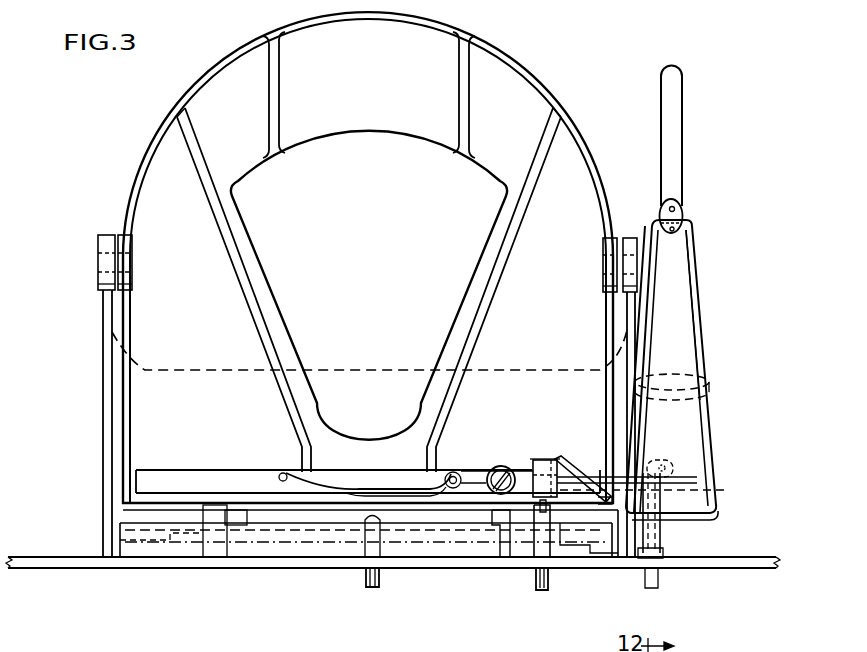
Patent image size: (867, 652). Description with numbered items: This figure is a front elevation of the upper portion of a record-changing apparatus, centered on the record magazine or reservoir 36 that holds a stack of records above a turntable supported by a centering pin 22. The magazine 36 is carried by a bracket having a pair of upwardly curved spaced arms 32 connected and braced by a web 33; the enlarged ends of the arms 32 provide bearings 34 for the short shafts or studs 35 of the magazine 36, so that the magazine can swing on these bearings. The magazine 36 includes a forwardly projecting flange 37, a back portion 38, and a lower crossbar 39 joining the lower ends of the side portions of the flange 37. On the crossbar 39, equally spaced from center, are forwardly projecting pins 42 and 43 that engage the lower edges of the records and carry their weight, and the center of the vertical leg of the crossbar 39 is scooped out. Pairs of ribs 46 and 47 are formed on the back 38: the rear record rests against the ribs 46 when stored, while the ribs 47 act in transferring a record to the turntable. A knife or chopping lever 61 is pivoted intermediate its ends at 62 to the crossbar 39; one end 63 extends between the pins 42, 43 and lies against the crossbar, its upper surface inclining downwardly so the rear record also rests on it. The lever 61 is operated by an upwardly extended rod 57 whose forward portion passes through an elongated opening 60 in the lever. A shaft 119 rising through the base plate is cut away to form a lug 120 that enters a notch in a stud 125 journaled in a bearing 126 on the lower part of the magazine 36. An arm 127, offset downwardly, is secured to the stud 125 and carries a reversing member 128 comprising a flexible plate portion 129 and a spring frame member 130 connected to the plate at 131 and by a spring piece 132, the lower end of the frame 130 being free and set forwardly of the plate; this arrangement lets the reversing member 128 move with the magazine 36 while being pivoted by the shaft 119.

The centering pin 22 is at (364, 578).
The upwardly curved spaced arms 32 is at (108, 387).
The web 33 is at (368, 370).
The bearings 34 is at (106, 236).
The short shafts or studs 35 is at (117, 268).
The record magazine or reservoir 36 is at (190, 88).
The forwardly projecting flange 37 is at (487, 44).
The back portion 38 is at (247, 68).
The lower crossbar 39 is at (210, 468).
The forwardly projecting pin 42 is at (284, 472).
The forwardly projecting pin 43 is at (453, 471).
The ribs 46 is at (281, 95).
The ribs 47 is at (220, 236).
The upwardly extended rod 57 is at (660, 530).
The elongated opening 60 is at (674, 466).
The knife or chopping lever 61 is at (598, 466).
The pivot 62 is at (499, 466).
The end of lever 63 is at (385, 487).
The shaft 119 is at (538, 578).
The lug 120 is at (548, 510).
The stud 125 is at (538, 468).
The bearing 126 is at (524, 498).
The arm 127 is at (603, 498).
The reversing member 128 is at (692, 273).
The flexible plate portion 129 is at (676, 172).
The spring frame member 130 is at (702, 314).
The connection 131 is at (683, 212).
The spring piece 132 is at (708, 382).